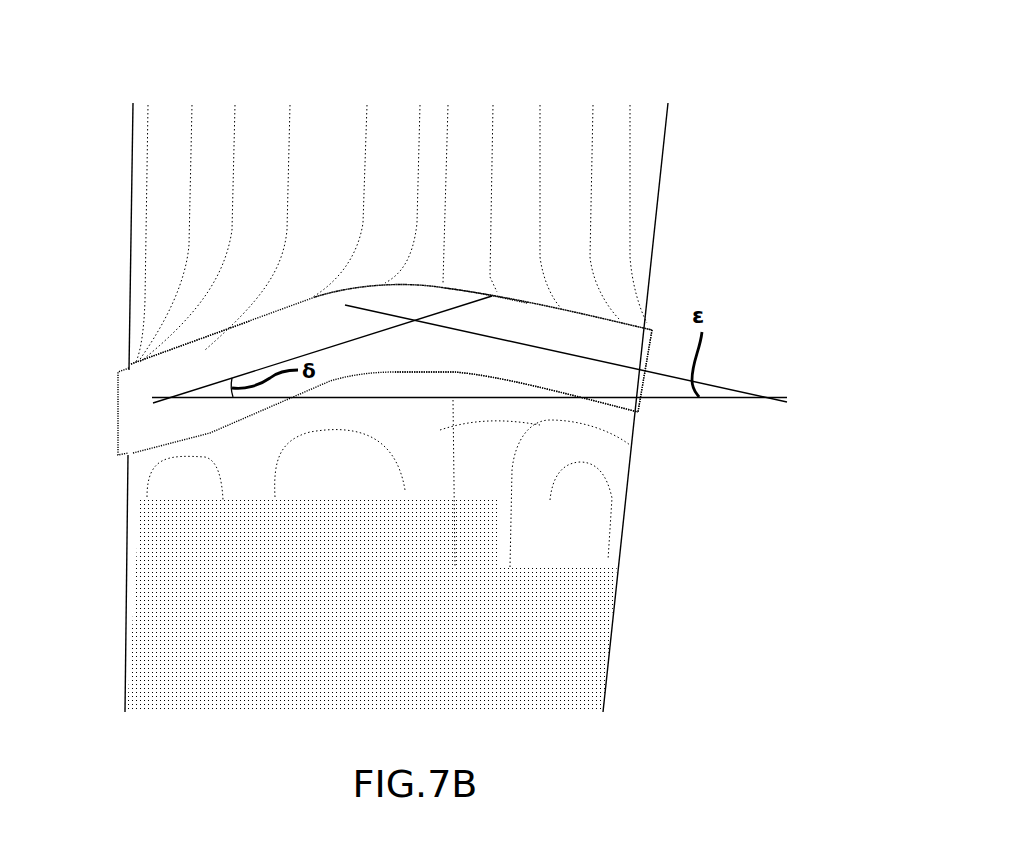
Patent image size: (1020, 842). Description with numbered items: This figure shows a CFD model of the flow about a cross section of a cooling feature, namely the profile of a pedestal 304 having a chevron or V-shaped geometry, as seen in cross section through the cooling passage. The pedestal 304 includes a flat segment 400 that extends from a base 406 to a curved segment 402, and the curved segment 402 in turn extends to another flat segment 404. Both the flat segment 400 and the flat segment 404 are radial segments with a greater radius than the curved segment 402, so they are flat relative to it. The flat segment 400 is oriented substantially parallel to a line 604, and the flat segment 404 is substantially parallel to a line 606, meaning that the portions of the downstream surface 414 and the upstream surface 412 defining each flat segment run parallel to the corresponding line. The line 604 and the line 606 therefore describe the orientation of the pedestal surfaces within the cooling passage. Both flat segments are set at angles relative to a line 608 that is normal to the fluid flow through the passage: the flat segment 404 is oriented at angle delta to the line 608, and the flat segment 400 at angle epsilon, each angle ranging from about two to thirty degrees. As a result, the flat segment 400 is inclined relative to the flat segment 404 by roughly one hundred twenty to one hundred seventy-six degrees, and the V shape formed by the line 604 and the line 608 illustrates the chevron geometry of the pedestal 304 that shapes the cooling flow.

The pedestal 304 is at (718, 74).
The flat segment 400 is at (603, 332).
The curved segment 402 is at (400, 307).
The flat segment 404 is at (238, 350).
The base 406 is at (652, 350).
The upstream surface 412 is at (527, 298).
The downstream surface 414 is at (530, 367).
The line 604 is at (727, 390).
The line 606 is at (190, 397).
The line 608 is at (193, 394).